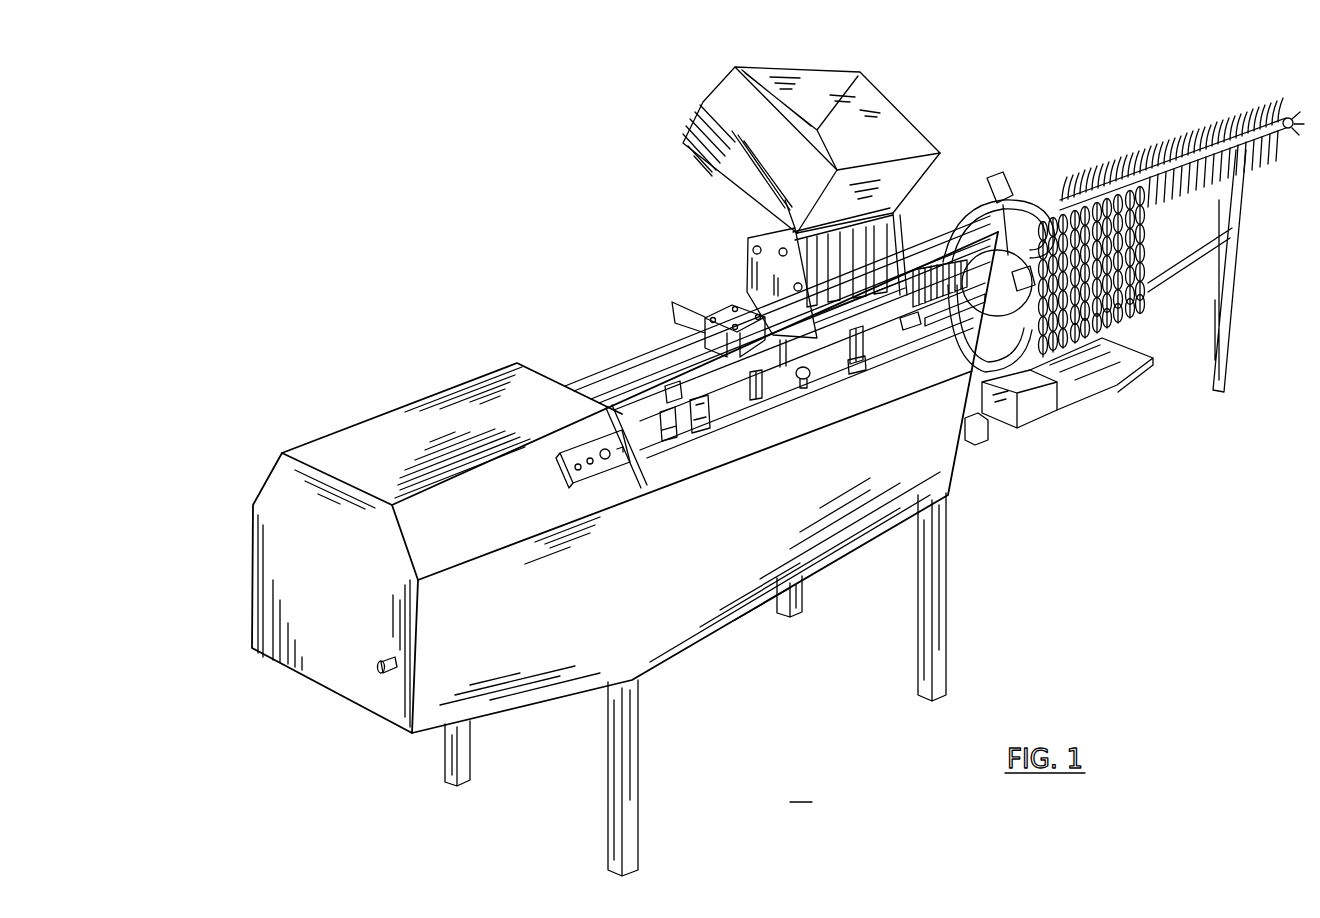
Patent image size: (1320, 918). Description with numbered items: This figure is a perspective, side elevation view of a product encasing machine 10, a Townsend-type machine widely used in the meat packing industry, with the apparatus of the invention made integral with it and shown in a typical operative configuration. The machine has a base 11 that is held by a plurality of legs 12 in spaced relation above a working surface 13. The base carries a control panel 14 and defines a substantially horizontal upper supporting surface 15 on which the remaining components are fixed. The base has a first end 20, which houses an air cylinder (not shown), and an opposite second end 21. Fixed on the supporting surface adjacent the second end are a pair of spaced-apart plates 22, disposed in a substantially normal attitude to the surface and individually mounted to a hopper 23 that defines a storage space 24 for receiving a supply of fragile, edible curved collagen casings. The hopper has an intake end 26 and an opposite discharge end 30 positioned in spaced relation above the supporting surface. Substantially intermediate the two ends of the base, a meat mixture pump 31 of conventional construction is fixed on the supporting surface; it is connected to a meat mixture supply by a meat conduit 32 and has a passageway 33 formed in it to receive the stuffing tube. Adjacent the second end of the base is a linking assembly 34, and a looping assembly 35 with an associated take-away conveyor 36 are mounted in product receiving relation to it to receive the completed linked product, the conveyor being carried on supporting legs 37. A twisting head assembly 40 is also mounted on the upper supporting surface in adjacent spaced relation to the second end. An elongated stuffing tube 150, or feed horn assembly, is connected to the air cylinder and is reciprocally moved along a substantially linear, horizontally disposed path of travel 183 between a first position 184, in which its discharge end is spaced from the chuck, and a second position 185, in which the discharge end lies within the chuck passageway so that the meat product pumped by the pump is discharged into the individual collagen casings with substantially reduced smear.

The product encasing machine 10 is at (460, 371).
The base 11 is at (520, 656).
The legs 12 is at (920, 633).
The working surface 13 is at (800, 792).
The control panel 14 is at (595, 445).
The upper supporting surface 15 is at (735, 420).
The first end 20 is at (290, 569).
The second end 21 is at (958, 467).
The plates 22 is at (744, 261).
The hopper 23 is at (833, 140).
The storage space 24 is at (839, 141).
The intake end 26 is at (907, 147).
The discharge end 30 is at (820, 335).
The meat mixture pump 31 is at (728, 314).
The meat conduit 32 is at (672, 320).
The passageway 33 is at (757, 385).
The linking assembly 34 is at (937, 311).
The looping assembly 35 is at (1011, 174).
The take-away conveyor 36 is at (1199, 116).
The supporting legs 37 is at (1230, 310).
The twisting head assembly 40 is at (907, 330).
The stuffing tube 150 is at (678, 378).
The path of travel 183 is at (662, 410).
The first position 184 is at (668, 392).
The second position 185 is at (888, 318).